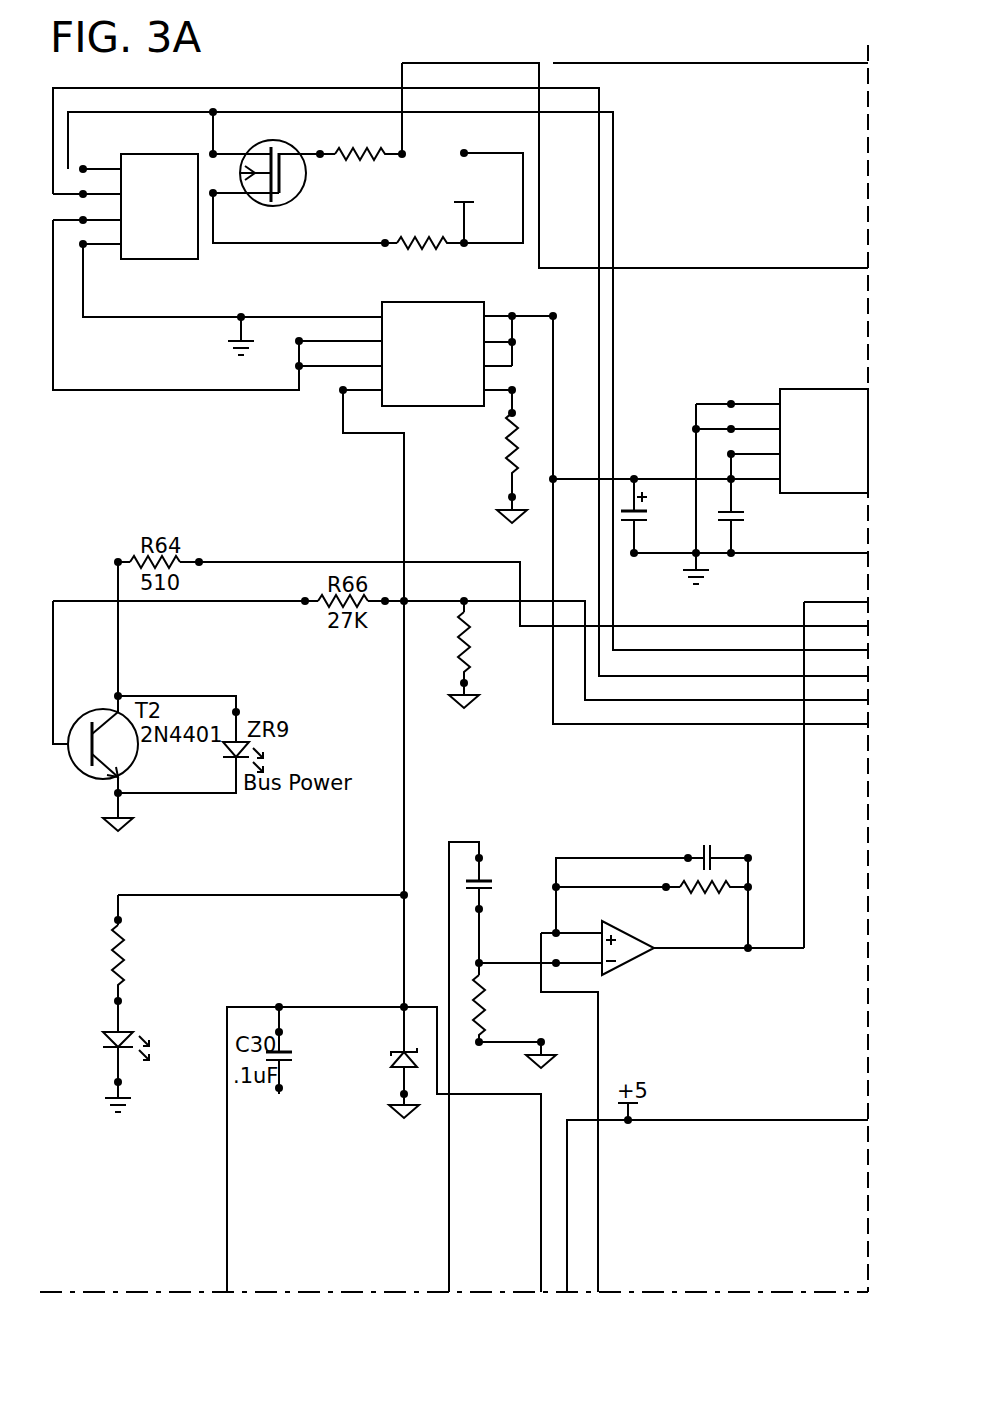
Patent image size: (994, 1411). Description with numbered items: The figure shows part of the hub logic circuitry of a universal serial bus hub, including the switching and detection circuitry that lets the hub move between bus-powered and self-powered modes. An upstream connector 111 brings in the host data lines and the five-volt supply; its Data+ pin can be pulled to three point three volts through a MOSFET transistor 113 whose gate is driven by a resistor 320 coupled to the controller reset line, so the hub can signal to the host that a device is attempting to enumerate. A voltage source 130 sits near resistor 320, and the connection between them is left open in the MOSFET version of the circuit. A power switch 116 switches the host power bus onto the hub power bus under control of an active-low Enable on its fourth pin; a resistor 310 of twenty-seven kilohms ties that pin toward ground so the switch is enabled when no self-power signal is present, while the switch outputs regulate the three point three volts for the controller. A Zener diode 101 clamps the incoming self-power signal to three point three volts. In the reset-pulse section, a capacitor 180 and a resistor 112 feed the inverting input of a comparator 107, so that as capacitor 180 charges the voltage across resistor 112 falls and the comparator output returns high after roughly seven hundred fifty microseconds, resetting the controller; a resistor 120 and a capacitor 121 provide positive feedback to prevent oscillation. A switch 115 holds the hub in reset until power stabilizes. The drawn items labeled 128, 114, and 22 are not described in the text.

The connector 111 is at (157, 152).
The MOSFET transistor 113 is at (272, 150).
The resistor 320 is at (367, 151).
The resistor R63 128 is at (410, 240).
The voltage source 130 is at (466, 178).
The switch 116 is at (437, 312).
The switch 115 is at (845, 389).
The resistor 310 is at (467, 668).
The capacitor 180 is at (500, 883).
The resistor 112 is at (483, 1004).
The comparator 107 is at (640, 947).
The resistor 120 is at (705, 845).
The capacitor 121 is at (715, 877).
The external power LED ZR8 114 is at (107, 1037).
The Zener diode 101 is at (393, 1056).
The ground node 22 is at (502, 1095).